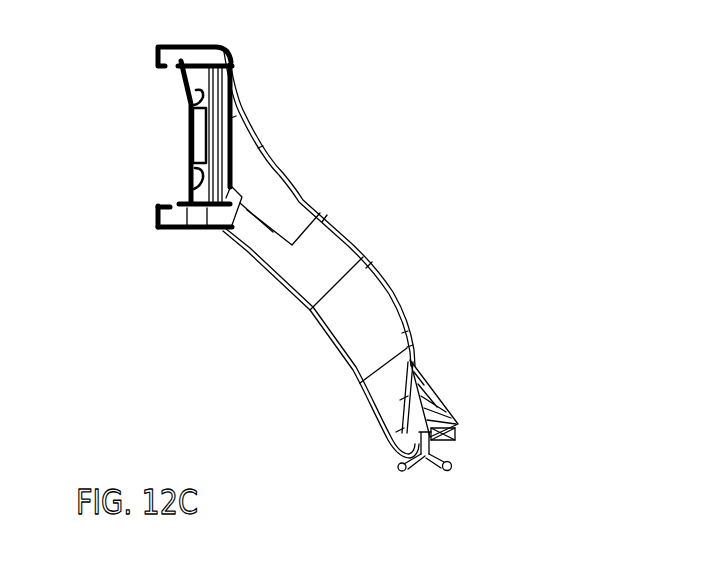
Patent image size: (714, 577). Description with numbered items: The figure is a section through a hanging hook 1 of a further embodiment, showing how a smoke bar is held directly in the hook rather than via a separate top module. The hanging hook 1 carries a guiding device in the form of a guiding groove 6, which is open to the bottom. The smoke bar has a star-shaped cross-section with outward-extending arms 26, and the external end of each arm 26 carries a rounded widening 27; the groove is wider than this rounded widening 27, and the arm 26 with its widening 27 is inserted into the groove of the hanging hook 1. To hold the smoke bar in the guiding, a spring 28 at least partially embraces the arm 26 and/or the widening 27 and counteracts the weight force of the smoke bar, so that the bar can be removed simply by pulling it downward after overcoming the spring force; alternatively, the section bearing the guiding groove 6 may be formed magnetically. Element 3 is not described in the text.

The hanging hook 1 is at (284, 174).
The fastening element 3 is at (398, 468).
The guiding groove 6 is at (420, 407).
The arm 26 is at (440, 456).
The rounded widening 27 is at (448, 471).
The spring 28 is at (455, 432).